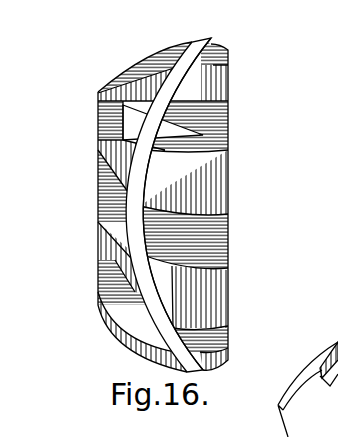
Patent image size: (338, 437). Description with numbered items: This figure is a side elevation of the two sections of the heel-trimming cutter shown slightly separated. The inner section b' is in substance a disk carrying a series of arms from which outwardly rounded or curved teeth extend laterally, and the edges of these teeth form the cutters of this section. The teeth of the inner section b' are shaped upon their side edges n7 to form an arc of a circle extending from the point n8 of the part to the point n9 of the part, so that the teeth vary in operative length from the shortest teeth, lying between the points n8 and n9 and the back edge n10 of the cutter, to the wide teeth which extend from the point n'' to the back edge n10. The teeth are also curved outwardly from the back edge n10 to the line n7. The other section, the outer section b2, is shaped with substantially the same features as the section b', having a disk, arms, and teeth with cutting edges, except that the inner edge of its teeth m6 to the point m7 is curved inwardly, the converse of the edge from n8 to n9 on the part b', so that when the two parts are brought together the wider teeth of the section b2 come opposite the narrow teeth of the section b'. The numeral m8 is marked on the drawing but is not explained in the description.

The point m7 is at (192, 43).
The point n8 is at (209, 42).
The back edge n10 is at (229, 52).
The side edges n7 is at (178, 82).
The inner section b' is at (175, 207).
The outer section b2 is at (98, 153).
The inner edge of the teeth m6 is at (98, 208).
The point n'' is at (184, 182).
The bottom rim m8 is at (187, 371).
The point n9 is at (200, 371).